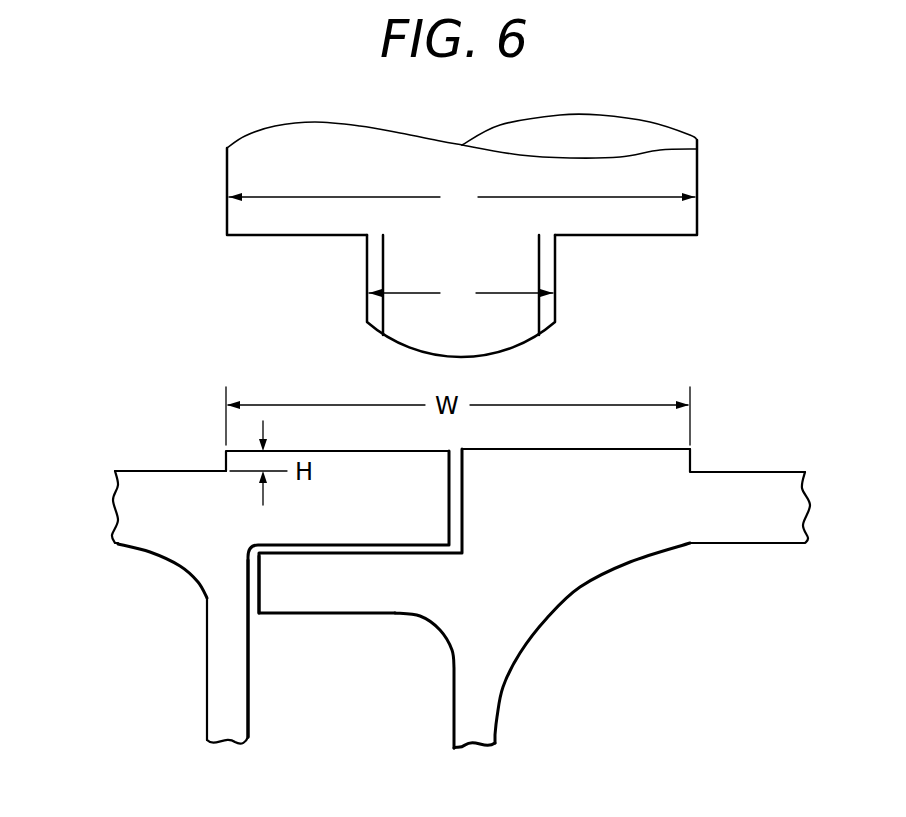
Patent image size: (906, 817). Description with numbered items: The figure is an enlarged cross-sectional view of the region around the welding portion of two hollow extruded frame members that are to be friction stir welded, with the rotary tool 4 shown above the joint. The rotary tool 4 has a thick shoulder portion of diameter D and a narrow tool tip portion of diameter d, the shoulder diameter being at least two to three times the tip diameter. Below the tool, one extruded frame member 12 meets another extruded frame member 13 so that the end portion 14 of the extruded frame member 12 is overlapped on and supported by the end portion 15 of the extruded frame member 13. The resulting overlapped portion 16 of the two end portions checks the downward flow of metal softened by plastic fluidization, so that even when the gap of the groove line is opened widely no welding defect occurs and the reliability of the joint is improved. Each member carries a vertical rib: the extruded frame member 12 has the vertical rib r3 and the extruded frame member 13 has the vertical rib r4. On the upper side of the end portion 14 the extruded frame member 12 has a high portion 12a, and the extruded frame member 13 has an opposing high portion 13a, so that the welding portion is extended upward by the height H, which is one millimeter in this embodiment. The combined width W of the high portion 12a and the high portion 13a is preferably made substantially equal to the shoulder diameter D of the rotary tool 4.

The rotary tool 4 is at (565, 134).
The extruded frame member 12 is at (182, 488).
The high portion 12a is at (340, 456).
The extruded frame member 13 is at (742, 493).
The high portion 13a is at (515, 456).
The end portion 14 is at (358, 515).
The end portion 15 is at (400, 590).
The overlapped portion 16 is at (349, 555).
The vertical rib r3 is at (219, 702).
The vertical rib r4 is at (486, 706).